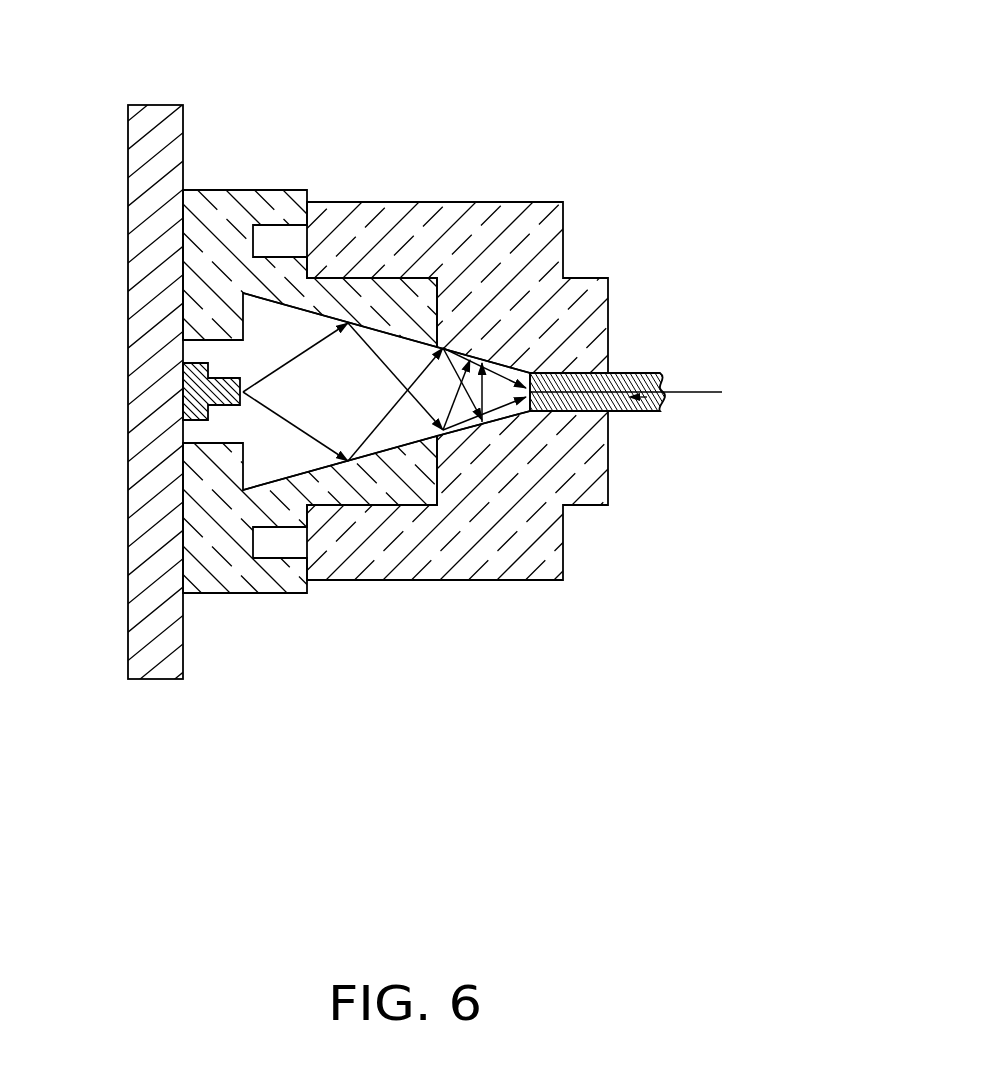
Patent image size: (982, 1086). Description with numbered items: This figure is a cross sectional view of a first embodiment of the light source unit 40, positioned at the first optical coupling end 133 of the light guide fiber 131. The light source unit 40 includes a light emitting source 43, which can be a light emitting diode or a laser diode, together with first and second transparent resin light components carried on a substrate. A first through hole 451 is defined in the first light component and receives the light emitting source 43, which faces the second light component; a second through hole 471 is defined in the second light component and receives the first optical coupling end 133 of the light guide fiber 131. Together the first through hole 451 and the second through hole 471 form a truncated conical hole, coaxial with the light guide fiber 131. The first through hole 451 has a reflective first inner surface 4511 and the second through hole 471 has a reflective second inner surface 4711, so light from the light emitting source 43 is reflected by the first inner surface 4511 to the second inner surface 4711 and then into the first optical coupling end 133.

The light source unit 40 is at (399, 361).
The light emitting source 43 is at (238, 391).
The first through hole 451 is at (293, 453).
The first inner surface 4511 is at (294, 310).
The second through hole 471 is at (443, 398).
The second inner surface 4711 is at (455, 372).
The light guide fiber 131 is at (637, 382).
The first optical coupling end 133 is at (512, 415).